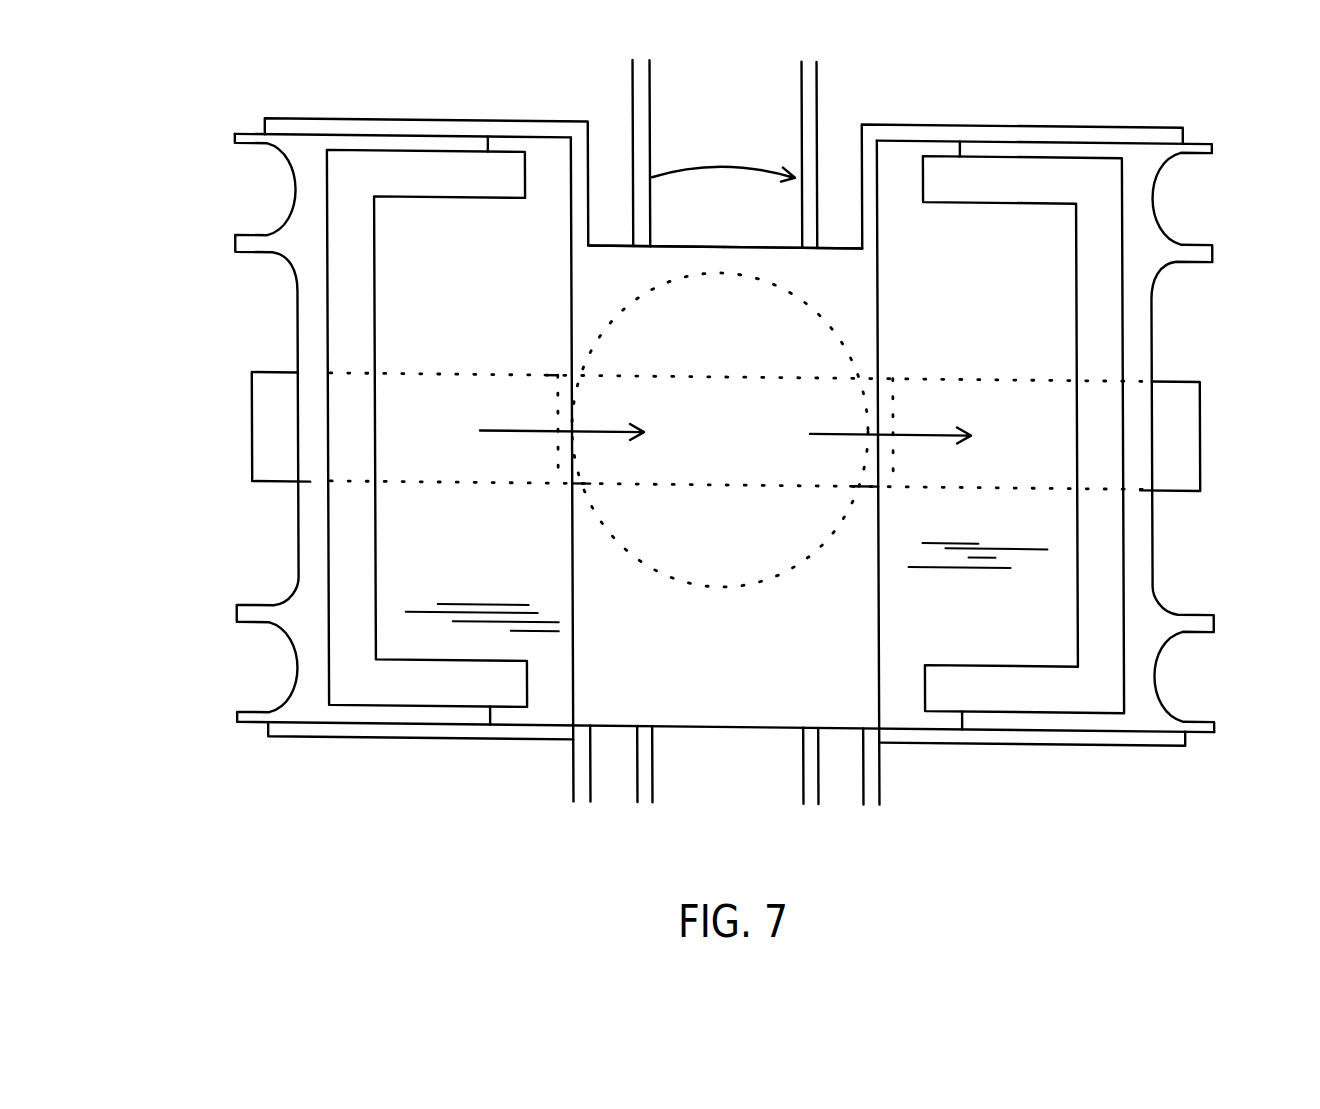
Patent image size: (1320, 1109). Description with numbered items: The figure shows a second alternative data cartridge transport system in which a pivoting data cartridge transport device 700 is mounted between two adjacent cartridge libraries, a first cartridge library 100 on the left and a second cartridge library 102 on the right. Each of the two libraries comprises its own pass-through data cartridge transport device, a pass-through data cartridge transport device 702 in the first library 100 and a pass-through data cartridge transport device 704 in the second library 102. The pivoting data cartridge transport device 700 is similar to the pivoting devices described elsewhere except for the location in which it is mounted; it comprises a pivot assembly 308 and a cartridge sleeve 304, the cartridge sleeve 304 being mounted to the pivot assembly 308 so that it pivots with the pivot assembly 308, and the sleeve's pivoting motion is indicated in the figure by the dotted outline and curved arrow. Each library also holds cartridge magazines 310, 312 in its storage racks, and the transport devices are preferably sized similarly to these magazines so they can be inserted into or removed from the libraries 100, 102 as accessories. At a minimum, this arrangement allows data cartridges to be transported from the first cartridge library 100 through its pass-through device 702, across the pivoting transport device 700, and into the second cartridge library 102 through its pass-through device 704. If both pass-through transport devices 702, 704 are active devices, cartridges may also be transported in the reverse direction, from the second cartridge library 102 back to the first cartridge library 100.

The first cartridge library 100 is at (331, 827).
The second cartridge library 102 is at (1108, 817).
The cartridge sleeve 304 is at (648, 377).
The pivot assembly 308 is at (842, 538).
The cartridge magazine 310 is at (498, 603).
The cartridge magazine 312 is at (1010, 652).
The pivoting data cartridge transport device 700 is at (652, 582).
The pass-through data cartridge transport device 702 is at (283, 500).
The pass-through data cartridge transport device 704 is at (1185, 491).